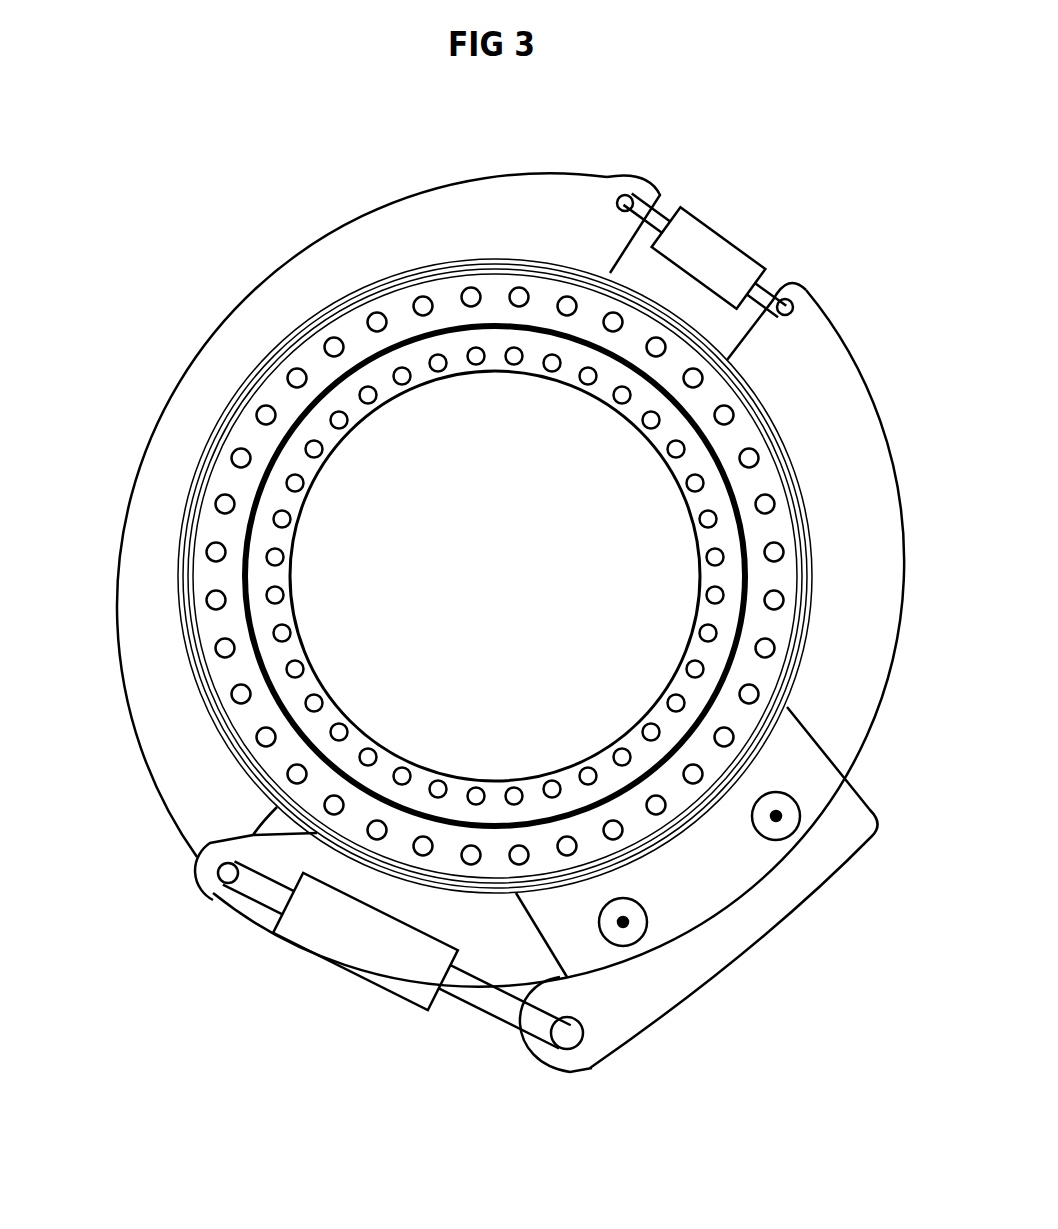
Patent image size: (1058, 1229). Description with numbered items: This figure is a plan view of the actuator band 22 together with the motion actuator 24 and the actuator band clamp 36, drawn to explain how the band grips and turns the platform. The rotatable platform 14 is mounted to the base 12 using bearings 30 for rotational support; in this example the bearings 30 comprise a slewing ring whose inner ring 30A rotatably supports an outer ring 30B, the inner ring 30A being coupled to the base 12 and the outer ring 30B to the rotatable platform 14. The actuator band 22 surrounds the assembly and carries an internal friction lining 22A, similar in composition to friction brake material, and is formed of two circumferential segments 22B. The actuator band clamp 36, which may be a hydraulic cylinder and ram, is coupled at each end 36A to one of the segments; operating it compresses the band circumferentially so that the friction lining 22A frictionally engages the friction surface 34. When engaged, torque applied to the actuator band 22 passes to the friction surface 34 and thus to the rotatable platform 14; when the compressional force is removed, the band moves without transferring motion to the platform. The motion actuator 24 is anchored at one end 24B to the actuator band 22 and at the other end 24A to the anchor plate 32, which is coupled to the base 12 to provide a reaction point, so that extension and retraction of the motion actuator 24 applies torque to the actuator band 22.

The base 12 is at (273, 497).
The rotatable platform 14 is at (353, 337).
The actuator band 22 is at (160, 730).
The internal friction lining 22A is at (180, 548).
The circumferential segments 22B is at (803, 357).
The motion actuator 24 is at (343, 948).
The other end of the motion actuator 24A is at (575, 1040).
The one end of the motion actuator 24B is at (227, 882).
The bearings 30 is at (303, 417).
The inner ring 30A is at (340, 397).
The outer ring 30B is at (250, 443).
The anchor plate 32 is at (752, 938).
The friction surface 34 is at (810, 590).
The actuator band clamp 36 is at (710, 245).
The ends of the actuator band clamp 36A is at (787, 300).